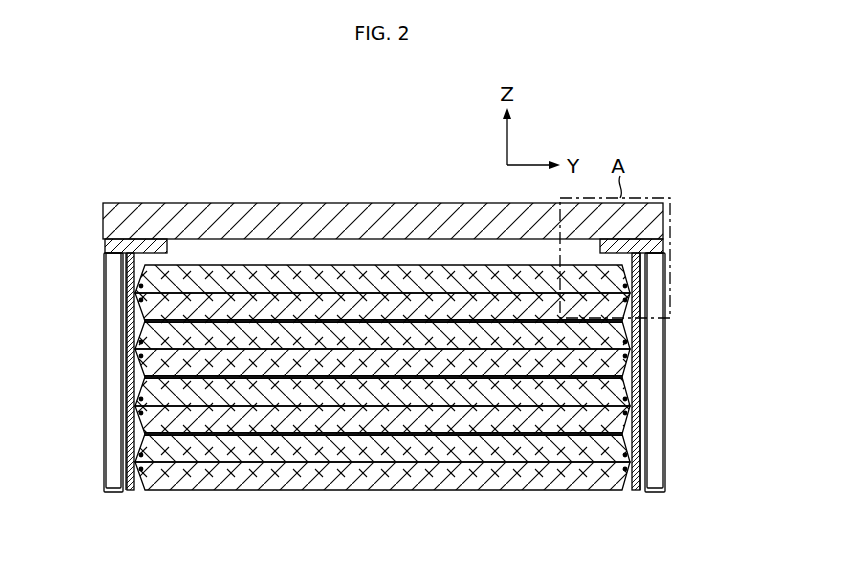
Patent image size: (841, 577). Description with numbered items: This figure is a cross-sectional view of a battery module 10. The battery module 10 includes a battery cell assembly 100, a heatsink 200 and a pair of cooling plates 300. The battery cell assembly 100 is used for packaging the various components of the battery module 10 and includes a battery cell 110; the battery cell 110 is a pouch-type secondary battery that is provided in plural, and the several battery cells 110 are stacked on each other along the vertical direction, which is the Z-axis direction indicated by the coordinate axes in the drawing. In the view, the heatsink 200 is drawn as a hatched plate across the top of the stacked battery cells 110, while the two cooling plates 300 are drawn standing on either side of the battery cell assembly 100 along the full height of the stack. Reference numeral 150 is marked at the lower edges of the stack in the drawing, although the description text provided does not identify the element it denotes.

The battery module 10 is at (143, 146).
The battery cell assembly 100 is at (348, 495).
The battery cell 110 is at (236, 268).
The electrode tab portion 150 is at (131, 492).
The heatsink 200 is at (337, 218).
The cooling plate 300 is at (93, 386).